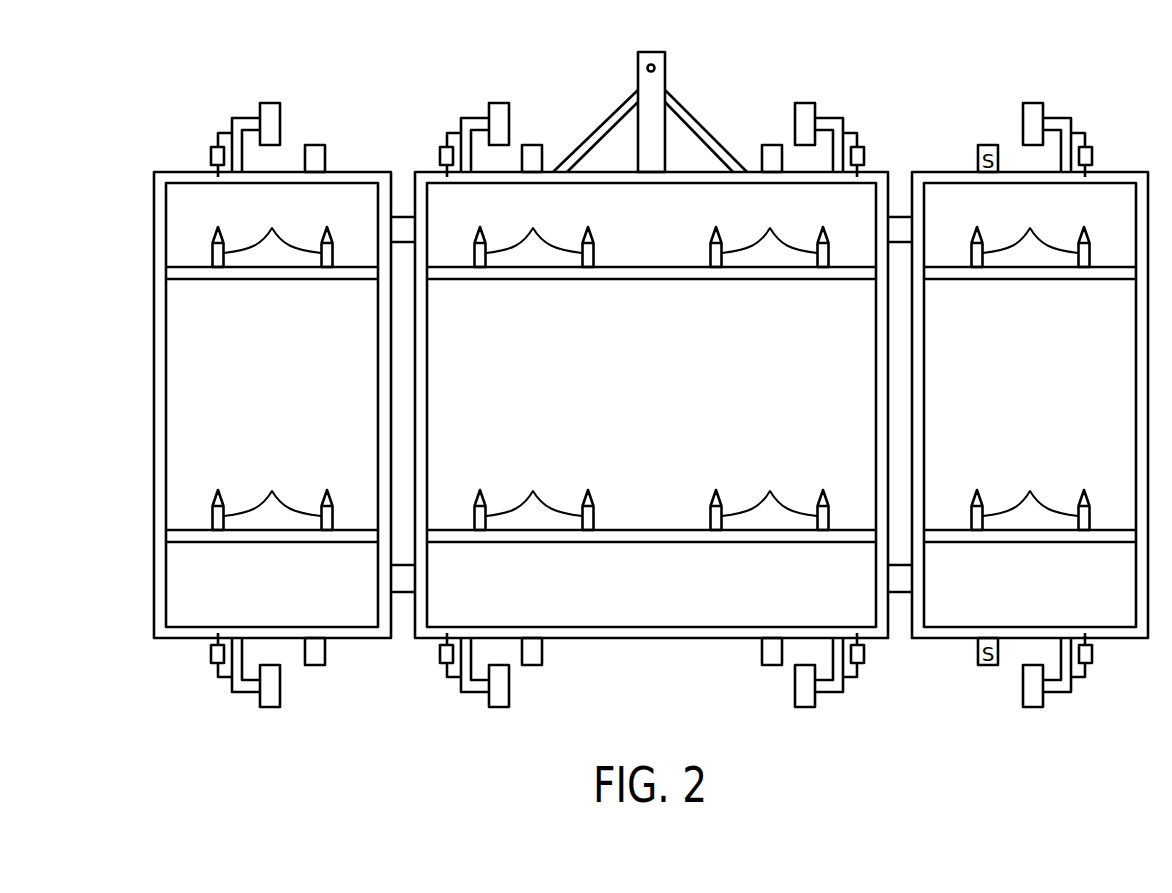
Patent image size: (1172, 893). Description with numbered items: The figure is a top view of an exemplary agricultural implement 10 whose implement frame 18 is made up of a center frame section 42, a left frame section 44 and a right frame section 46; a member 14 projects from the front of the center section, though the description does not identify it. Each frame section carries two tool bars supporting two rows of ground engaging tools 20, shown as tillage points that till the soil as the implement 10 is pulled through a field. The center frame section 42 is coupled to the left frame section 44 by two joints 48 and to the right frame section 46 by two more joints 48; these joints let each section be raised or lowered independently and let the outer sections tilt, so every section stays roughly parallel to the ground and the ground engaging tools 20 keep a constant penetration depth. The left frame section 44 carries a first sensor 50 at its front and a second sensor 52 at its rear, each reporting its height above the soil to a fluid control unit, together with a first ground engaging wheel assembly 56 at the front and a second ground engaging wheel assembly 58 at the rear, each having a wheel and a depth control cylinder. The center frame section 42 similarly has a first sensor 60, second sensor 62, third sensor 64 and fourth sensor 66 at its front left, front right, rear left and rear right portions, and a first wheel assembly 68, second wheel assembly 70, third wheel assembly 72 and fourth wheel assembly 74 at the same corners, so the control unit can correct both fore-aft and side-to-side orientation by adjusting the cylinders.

The agricultural implement 10 is at (899, 33).
The hitch 14 is at (655, 52).
The implement frame 18 is at (126, 390).
The ground engaging tools 20 is at (651, 365).
The center frame section 42 is at (427, 405).
The left frame section 44 is at (166, 405).
The right frame section 46 is at (1136, 405).
The joints 48 is at (405, 217).
The first sensor 50 is at (311, 145).
The second sensor 52 is at (311, 665).
The first ground engaging wheel assembly 56 is at (247, 118).
The second ground engaging wheel assembly 58 is at (247, 692).
The first sensor 60 is at (528, 145).
The second sensor 62 is at (773, 145).
The third sensor 64 is at (528, 665).
The fourth sensor 66 is at (773, 665).
The first ground engaging wheel assembly 68 is at (475, 118).
The second ground engaging wheel assembly 70 is at (829, 118).
The third ground engaging wheel assembly 72 is at (473, 692).
The fourth ground engaging wheel assembly 74 is at (829, 692).